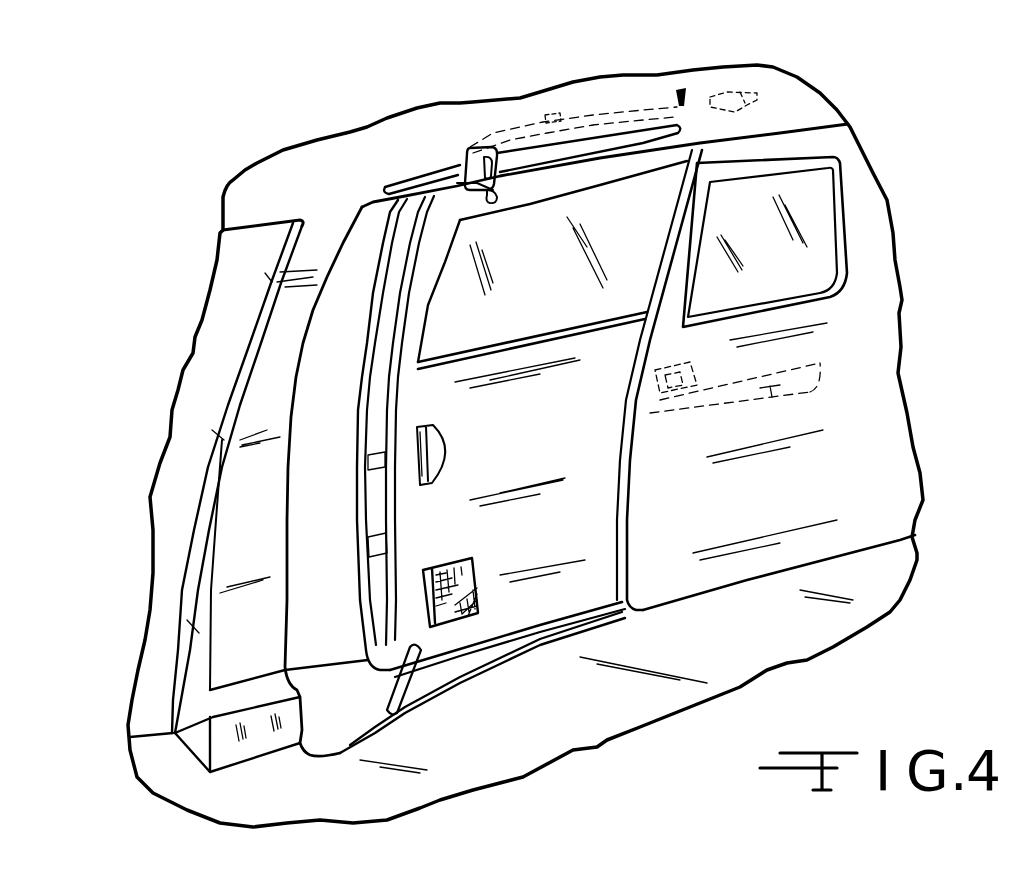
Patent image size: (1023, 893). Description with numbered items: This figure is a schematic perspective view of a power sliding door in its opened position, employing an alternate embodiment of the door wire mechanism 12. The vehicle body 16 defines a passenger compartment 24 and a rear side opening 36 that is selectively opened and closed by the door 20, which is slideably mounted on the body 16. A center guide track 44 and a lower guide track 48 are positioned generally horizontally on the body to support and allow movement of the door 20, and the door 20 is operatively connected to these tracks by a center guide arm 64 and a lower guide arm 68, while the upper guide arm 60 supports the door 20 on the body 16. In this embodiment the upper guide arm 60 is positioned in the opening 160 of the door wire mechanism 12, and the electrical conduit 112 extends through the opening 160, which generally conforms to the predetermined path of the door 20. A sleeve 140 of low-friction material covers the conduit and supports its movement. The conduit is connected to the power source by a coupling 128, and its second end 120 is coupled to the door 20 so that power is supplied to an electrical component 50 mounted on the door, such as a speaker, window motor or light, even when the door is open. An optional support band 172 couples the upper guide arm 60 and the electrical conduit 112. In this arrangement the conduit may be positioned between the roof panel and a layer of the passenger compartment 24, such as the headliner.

The door wire mechanism 12 is at (603, 72).
The vehicle body 16 is at (243, 240).
The door 20 is at (557, 640).
The passenger compartment 24 is at (832, 85).
The rear side opening 36 is at (297, 490).
The center guide track 44 is at (812, 391).
The lower guide track 48 is at (457, 684).
The electrical component 50 is at (479, 573).
The upper guide arm 60 is at (470, 150).
The center guide arm 64 is at (676, 363).
The lower guide arm 68 is at (387, 688).
The electrical conduit 112 is at (681, 90).
The second end 120 is at (497, 197).
The coupling 128 is at (734, 90).
The sleeve 140 is at (551, 116).
The opening 160 is at (683, 138).
The support band 172 is at (460, 180).